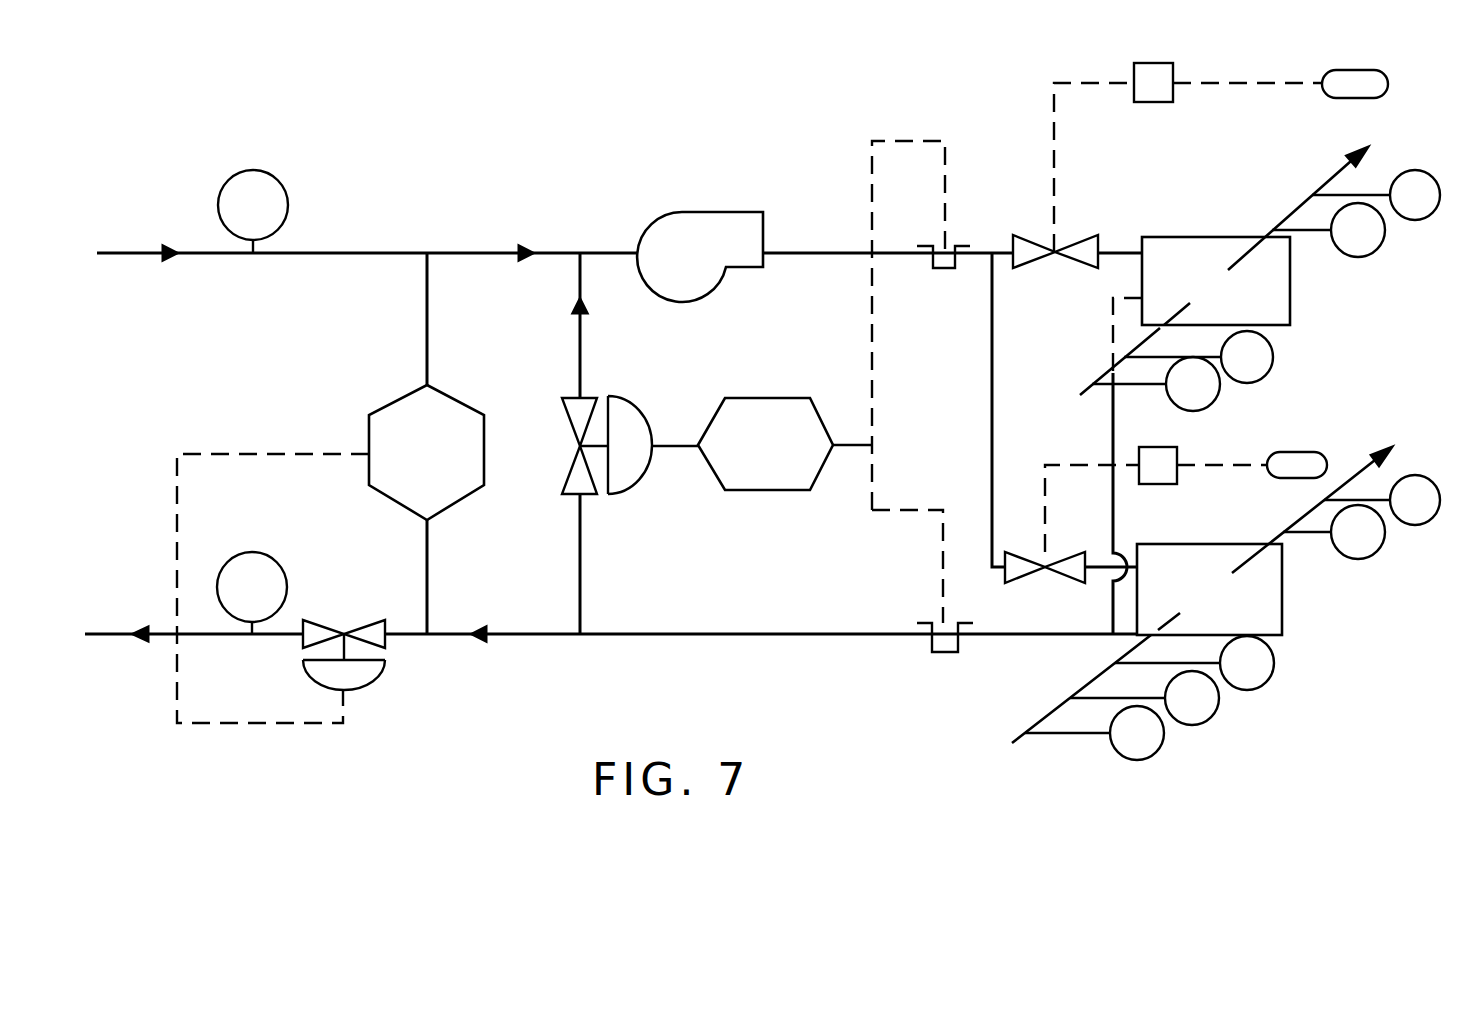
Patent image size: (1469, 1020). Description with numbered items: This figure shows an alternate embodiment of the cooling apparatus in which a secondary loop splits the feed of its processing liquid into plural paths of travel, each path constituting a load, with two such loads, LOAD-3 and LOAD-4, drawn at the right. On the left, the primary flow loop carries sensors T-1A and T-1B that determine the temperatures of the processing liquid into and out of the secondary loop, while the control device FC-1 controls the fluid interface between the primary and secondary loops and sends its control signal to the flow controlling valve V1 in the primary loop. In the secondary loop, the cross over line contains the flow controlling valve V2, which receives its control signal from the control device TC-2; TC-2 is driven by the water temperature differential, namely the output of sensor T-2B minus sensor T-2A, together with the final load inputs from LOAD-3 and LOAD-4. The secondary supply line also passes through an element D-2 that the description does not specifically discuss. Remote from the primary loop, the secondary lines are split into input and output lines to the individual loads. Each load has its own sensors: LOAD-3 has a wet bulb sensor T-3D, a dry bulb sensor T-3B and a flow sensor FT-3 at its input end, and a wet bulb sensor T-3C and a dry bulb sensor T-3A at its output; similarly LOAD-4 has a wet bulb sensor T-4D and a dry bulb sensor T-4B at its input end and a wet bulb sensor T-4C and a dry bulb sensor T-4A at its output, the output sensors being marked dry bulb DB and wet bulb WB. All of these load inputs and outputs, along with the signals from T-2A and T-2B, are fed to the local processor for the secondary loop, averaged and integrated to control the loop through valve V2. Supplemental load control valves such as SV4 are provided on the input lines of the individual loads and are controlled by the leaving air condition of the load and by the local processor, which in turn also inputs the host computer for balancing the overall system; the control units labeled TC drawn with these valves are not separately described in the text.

The primary loop inlet temperature sensor T-1A is at (253, 211).
The primary loop outlet temperature sensor T-1B is at (252, 593).
The flow control device FC-1 is at (426, 452).
The primary loop flow controlling valve V1 is at (344, 655).
The cross over line flow controlling valve V2 is at (630, 445).
The secondary loop control device TC-2 is at (785, 444).
The pump D-2 is at (700, 257).
The secondary loop supply fluid temperature sensor T-2A is at (943, 269).
The secondary loop return fluid temperature sensor T-2B is at (945, 649).
The supplemental load control valve SV4 is at (1055, 260).
The thermostat controller TC is at (1155, 273).
The load LOAD-4 is at (1224, 271).
The load LOAD-3 is at (1202, 595).
The dry bulb sensor T-4A is at (1376, 195).
The wet bulb sensor T-4C is at (1328, 230).
The dry bulb sensor T-4B is at (1198, 357).
The wet bulb sensor T-4D is at (1156, 384).
The dry bulb sensor T-3A is at (1382, 500).
The wet bulb sensor T-3C is at (1334, 532).
The flow sensor FT-3 is at (1194, 663).
The dry bulb sensor T-3B is at (1144, 698).
The wet bulb sensor T-3D is at (1094, 733).
The dry bulb DB is at (1449, 371).
The wet bulb WB is at (1399, 407).